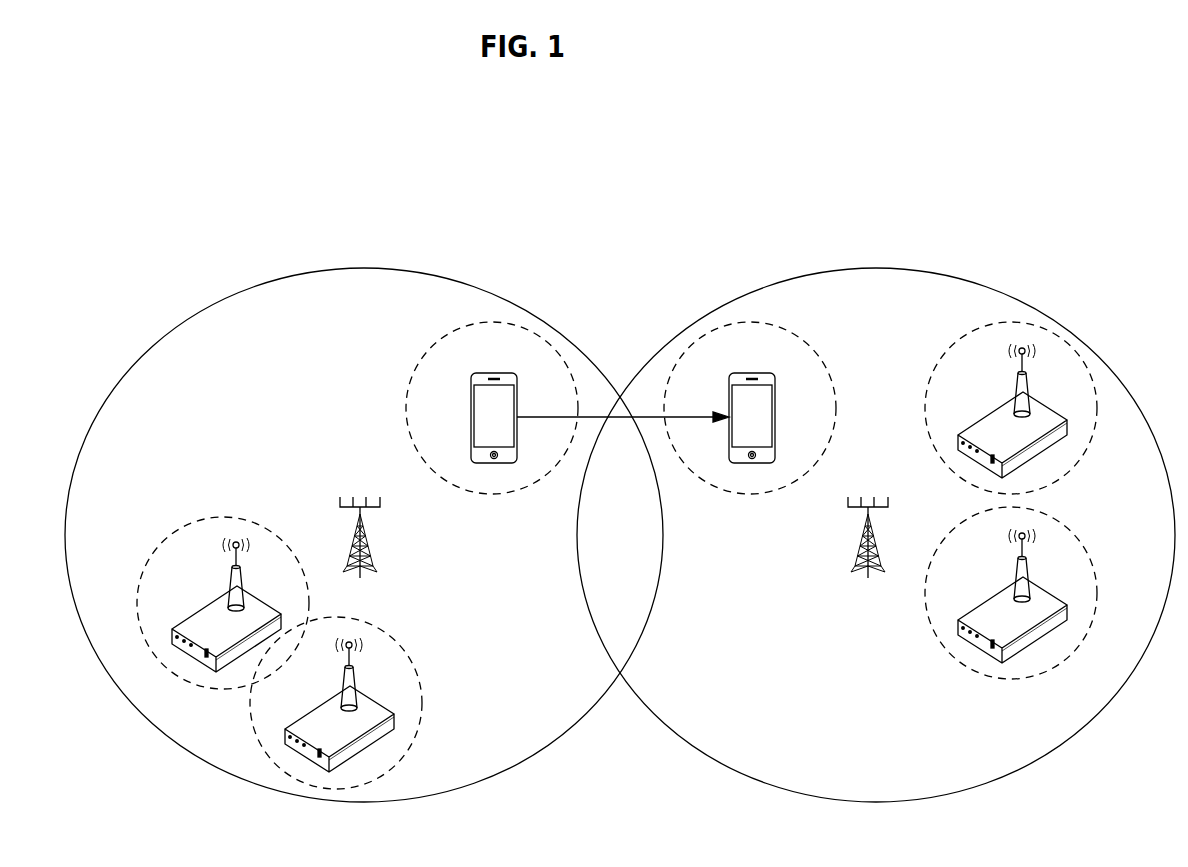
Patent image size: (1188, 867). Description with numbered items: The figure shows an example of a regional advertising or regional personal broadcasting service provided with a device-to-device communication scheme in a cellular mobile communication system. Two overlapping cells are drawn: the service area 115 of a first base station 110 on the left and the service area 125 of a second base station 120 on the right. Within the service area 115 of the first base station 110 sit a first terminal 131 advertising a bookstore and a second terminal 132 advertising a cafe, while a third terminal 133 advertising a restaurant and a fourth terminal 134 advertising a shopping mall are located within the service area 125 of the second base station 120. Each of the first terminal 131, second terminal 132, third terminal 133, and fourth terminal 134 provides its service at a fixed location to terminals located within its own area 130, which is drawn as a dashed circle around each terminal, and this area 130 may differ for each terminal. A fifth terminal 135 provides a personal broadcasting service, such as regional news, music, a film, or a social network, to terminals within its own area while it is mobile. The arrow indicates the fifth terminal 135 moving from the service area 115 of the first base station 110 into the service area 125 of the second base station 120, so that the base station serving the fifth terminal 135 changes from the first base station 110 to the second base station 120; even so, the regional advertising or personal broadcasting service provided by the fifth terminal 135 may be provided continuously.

The first base station 110 is at (360, 497).
The service area of the first base station 115 is at (362, 267).
The second base station 120 is at (869, 497).
The service area of the second base station 125 is at (872, 267).
The area of the terminal 130 is at (187, 522).
The first terminal 131 is at (214, 611).
The second terminal 132 is at (327, 711).
The third terminal 133 is at (1002, 416).
The fourth terminal 134 is at (1002, 601).
The fifth terminal 135 is at (493, 372).